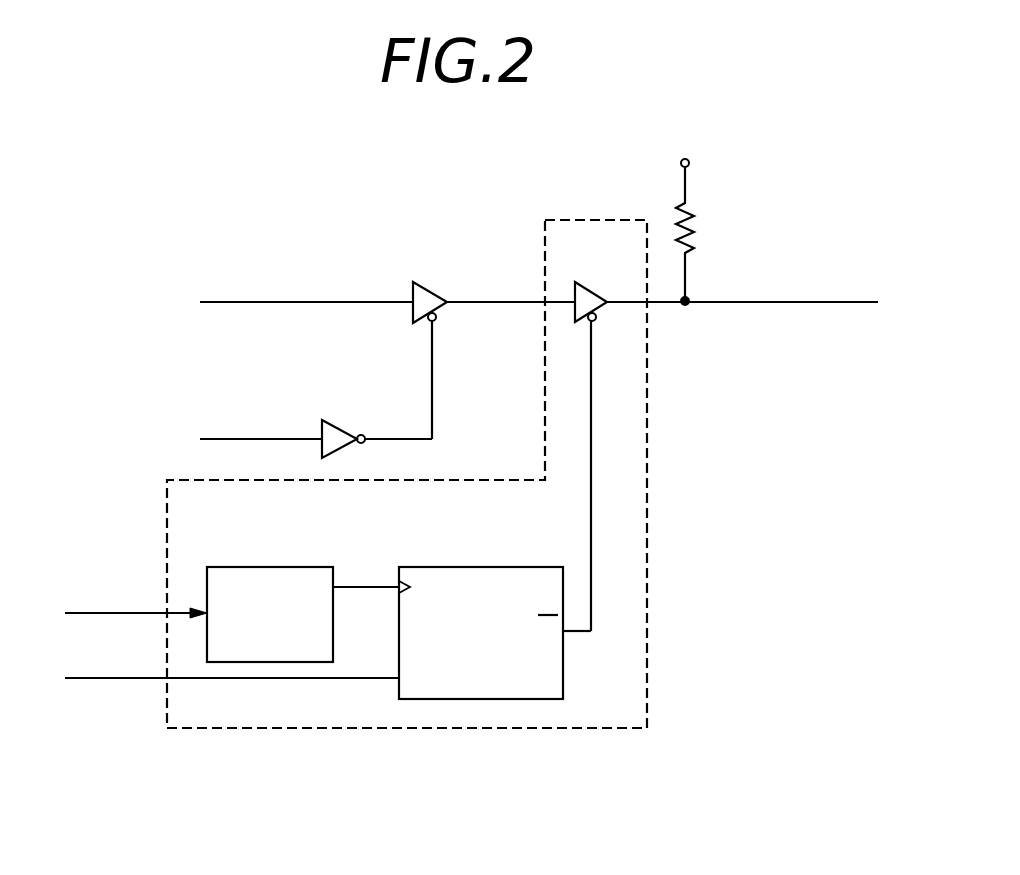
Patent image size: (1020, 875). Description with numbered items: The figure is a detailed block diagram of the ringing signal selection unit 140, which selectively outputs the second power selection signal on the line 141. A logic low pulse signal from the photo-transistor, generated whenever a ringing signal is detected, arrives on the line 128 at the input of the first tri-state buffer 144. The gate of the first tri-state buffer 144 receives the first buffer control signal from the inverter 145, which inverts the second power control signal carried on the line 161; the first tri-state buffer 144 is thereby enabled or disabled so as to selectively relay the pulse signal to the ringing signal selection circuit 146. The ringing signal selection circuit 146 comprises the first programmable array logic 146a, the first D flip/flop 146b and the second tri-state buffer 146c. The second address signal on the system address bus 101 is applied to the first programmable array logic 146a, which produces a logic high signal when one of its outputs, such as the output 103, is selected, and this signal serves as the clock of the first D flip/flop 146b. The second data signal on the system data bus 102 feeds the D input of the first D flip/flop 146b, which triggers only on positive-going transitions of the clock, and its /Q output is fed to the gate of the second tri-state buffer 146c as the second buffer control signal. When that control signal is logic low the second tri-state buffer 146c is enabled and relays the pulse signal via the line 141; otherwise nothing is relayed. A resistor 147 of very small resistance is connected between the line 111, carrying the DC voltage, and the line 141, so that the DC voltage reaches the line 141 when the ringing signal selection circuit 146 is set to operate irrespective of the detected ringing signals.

The ringing signal selection unit 140 is at (515, 175).
The line 128 is at (241, 277).
The first tri-state buffer 144 is at (448, 268).
The line 161 is at (222, 438).
The inverter 145 is at (358, 403).
The ringing signal selection circuit 146 is at (608, 195).
The first programmable array logic 146a is at (290, 543).
The first D flip/flop 146b is at (513, 540).
The second tri-state buffer 146c is at (609, 266).
The resistor 147 is at (720, 236).
The line 111 is at (705, 135).
The line 141 is at (822, 300).
The system address bus 101 is at (111, 590).
The system data bus 102 is at (92, 683).
The output 103 is at (358, 585).